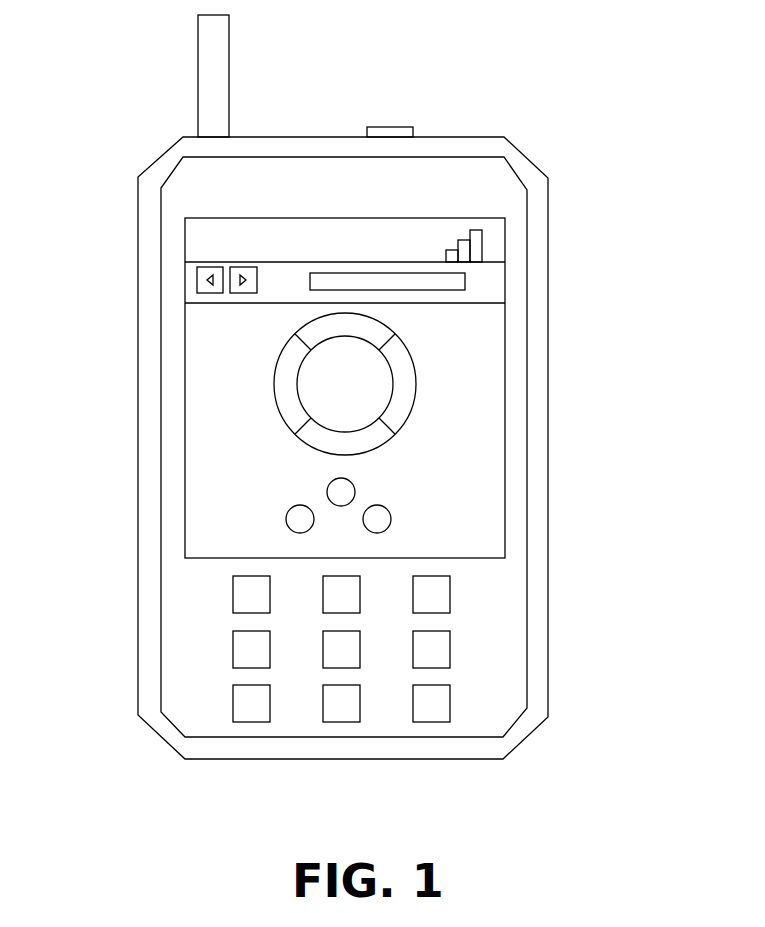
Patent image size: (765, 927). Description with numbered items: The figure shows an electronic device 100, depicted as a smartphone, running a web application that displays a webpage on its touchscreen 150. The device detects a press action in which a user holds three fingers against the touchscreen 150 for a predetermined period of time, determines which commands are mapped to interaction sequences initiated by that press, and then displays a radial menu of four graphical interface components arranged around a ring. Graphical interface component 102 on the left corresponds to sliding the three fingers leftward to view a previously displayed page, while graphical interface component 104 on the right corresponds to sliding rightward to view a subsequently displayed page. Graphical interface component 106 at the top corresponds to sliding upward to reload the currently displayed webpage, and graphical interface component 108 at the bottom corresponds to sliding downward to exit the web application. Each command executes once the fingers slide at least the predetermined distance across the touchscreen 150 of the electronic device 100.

The electronic device 100 is at (306, 137).
The touchscreen 150 is at (505, 426).
The graphical interface component 102 is at (274, 380).
The graphical interface component 104 is at (416, 379).
The graphical interface component 106 is at (297, 329).
The graphical interface component 108 is at (297, 455).